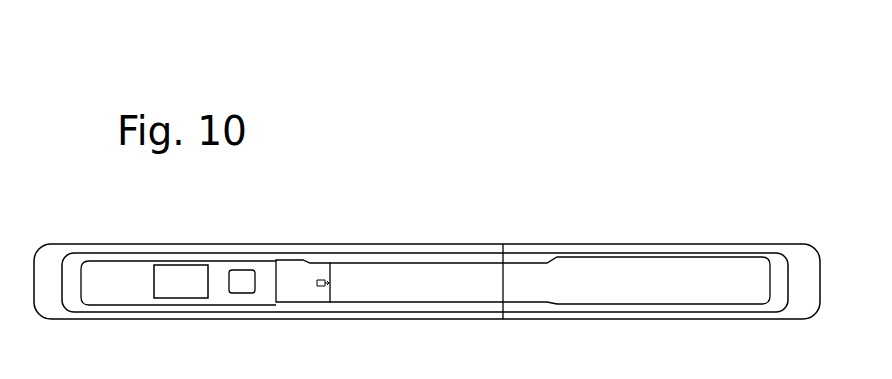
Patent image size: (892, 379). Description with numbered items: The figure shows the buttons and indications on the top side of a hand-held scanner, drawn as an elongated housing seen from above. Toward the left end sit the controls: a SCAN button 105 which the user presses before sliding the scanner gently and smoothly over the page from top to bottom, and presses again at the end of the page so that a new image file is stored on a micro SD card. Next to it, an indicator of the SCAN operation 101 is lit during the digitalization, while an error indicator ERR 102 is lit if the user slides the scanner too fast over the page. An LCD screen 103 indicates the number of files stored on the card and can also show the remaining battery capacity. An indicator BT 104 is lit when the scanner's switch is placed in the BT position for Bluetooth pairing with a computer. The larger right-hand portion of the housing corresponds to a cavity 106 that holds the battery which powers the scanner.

The indicator of the SCAN operation 101 is at (129, 262).
The error indicator ERR 102 is at (125, 302).
The LCD screen 103 is at (181, 286).
The indicator BT 104 is at (243, 294).
The SCAN button 105 is at (305, 289).
The cavity 106 is at (663, 285).